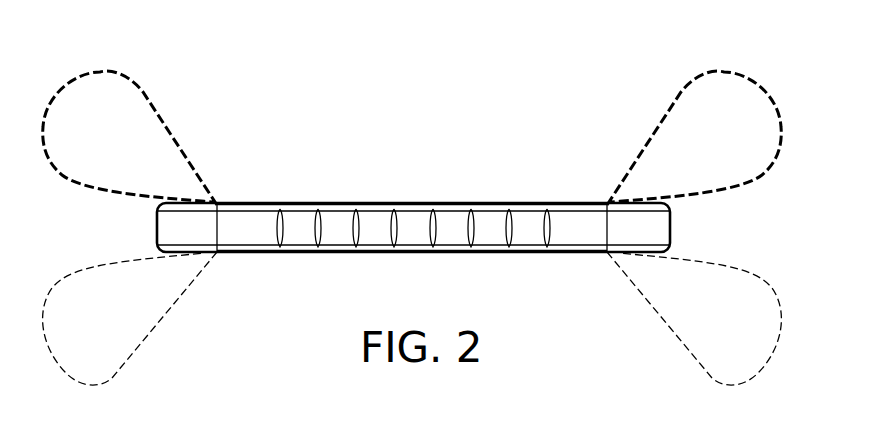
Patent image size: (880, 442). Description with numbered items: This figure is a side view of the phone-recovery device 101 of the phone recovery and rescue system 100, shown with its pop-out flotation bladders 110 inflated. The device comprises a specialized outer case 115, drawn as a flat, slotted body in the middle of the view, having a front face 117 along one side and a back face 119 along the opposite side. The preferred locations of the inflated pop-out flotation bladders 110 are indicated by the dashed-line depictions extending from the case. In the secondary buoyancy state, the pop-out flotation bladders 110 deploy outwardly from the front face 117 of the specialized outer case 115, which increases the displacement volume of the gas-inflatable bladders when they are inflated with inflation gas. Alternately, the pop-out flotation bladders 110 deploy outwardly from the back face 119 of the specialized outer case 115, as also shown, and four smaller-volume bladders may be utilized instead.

The phone recovery and rescue system 100 is at (122, 45).
The phone-recovery device 101 is at (752, 218).
The pop-out flotation bladders 110 is at (143, 92).
The specialized outer case 115 is at (446, 232).
The front face 117 is at (314, 203).
The back face 119 is at (253, 253).